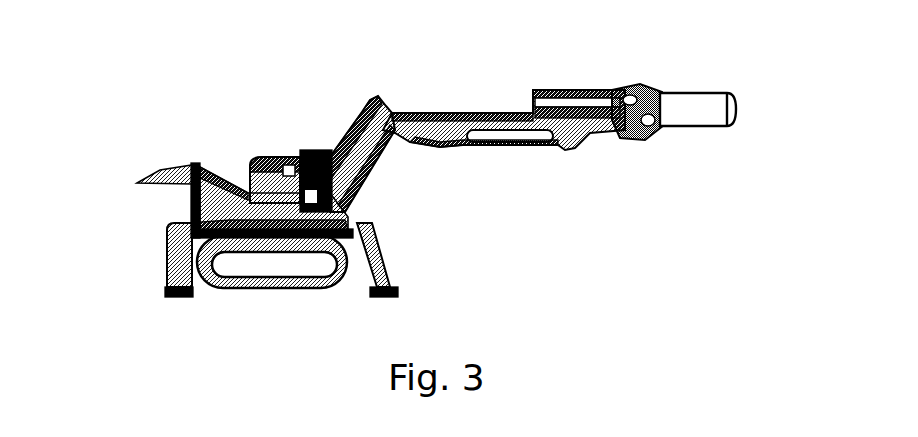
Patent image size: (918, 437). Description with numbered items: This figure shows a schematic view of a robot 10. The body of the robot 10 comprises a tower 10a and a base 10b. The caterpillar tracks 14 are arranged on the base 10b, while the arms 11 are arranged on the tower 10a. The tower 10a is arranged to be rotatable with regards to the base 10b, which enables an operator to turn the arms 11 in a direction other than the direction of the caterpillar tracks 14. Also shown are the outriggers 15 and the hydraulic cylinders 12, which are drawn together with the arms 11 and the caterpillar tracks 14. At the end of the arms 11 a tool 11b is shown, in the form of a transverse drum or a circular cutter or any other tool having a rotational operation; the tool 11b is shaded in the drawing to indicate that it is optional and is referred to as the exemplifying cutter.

The robot 10 is at (162, 138).
The tower 10a is at (255, 163).
The base 10b is at (189, 208).
The arms 11 is at (448, 120).
The tool 11b is at (755, 170).
The hydraulic cylinders 12 is at (357, 123).
The caterpillar tracks 14 is at (245, 281).
The outriggers 15 is at (167, 252).